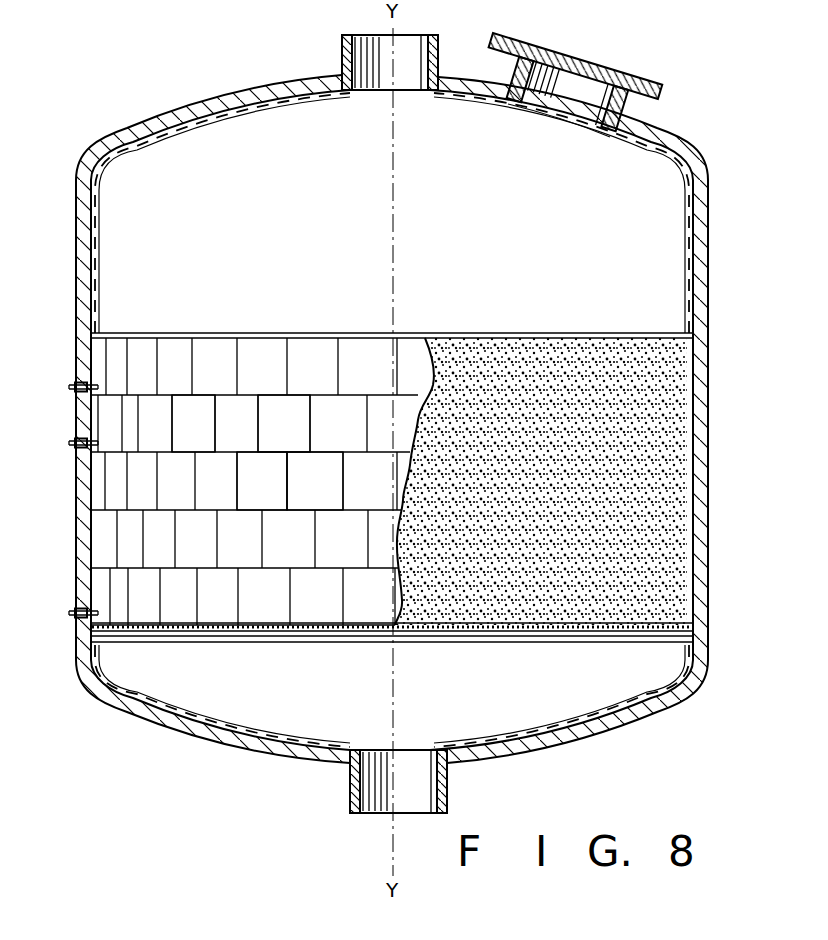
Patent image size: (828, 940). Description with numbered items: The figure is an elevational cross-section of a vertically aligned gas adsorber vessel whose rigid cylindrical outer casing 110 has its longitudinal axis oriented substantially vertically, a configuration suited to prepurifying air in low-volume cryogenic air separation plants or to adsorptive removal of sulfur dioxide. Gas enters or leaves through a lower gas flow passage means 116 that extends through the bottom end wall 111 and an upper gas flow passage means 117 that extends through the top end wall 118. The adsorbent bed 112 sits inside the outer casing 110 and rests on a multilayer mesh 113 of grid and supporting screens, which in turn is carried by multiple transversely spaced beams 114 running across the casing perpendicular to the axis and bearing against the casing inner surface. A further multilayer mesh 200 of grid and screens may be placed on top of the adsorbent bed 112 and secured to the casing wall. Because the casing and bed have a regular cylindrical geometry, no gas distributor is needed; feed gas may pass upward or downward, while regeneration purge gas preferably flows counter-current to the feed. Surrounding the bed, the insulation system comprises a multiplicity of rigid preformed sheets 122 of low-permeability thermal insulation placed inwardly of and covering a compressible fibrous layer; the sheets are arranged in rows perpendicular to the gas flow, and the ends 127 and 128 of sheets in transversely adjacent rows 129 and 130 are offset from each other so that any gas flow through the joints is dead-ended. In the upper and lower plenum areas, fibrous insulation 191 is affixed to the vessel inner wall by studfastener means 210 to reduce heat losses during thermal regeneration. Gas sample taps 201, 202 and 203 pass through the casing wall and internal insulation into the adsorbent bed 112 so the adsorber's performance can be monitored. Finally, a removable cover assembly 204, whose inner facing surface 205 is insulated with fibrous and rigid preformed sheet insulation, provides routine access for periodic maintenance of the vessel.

The rigid cylindrical outer casing 110 is at (708, 304).
The bottom end wall 111 is at (466, 770).
The adsorbent bed 112 is at (497, 360).
The multilayer mesh 113 is at (192, 632).
The transversely spaced beams 114 is at (252, 643).
The lower gas flow passage means 116 is at (352, 793).
The upper gas flow passage means 117 is at (343, 47).
The top end wall 118 is at (191, 106).
The rigid preformed sheets 122 is at (152, 548).
The sheet end 127 is at (213, 434).
The sheet end 128 is at (237, 484).
The row of sheets 129 is at (287, 410).
The row of sheets 130 is at (322, 462).
The fibrous insulation 191 is at (284, 104).
The multilayer mesh 200 is at (238, 336).
The gas sample tap 201 is at (77, 620).
The gas sample tap 202 is at (76, 446).
The gas sample tap 203 is at (75, 384).
The removable cover assembly 204 is at (602, 45).
The inner facing surface 205 is at (562, 105).
The studfastener means 210 is at (248, 112).